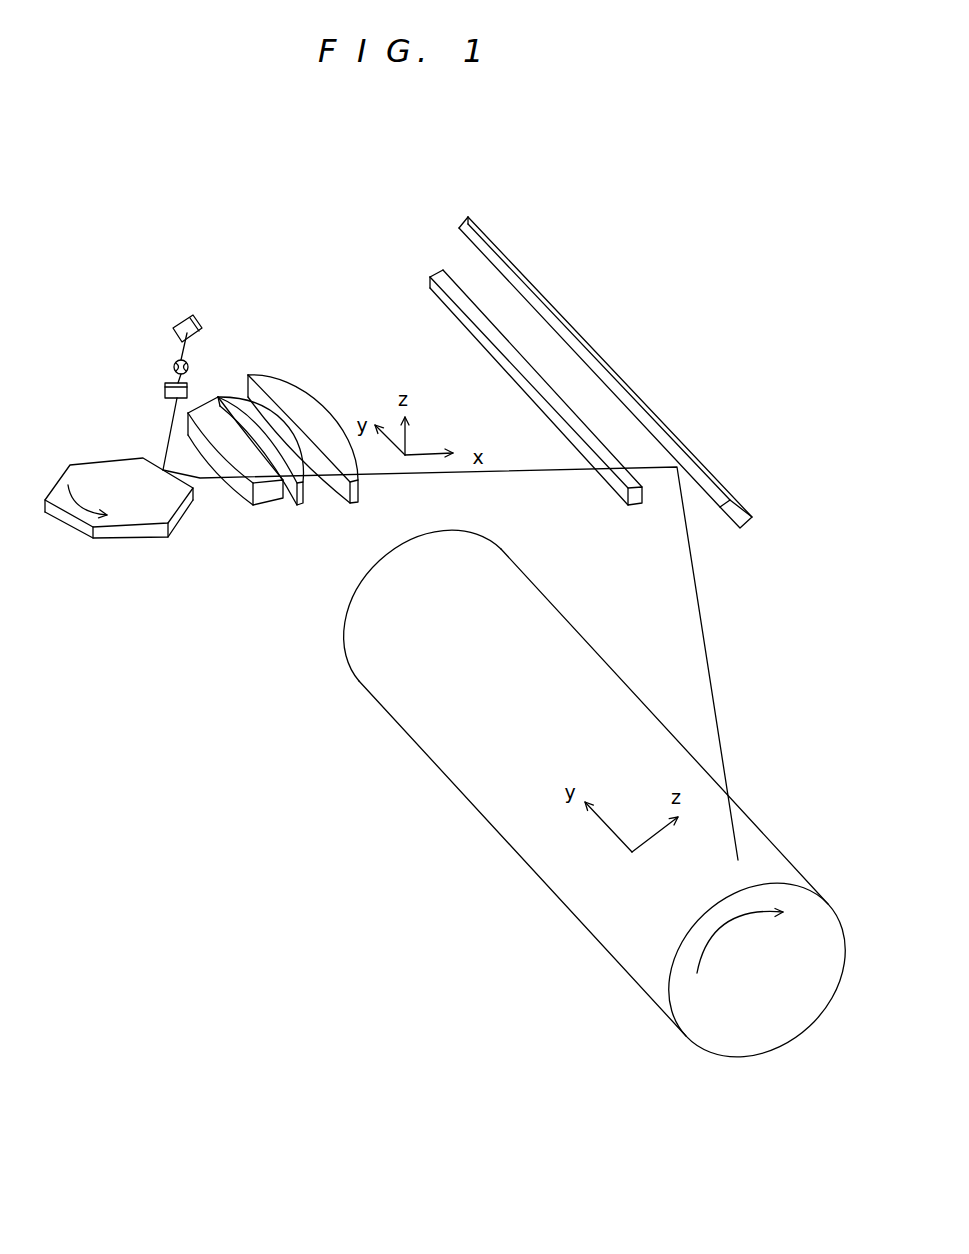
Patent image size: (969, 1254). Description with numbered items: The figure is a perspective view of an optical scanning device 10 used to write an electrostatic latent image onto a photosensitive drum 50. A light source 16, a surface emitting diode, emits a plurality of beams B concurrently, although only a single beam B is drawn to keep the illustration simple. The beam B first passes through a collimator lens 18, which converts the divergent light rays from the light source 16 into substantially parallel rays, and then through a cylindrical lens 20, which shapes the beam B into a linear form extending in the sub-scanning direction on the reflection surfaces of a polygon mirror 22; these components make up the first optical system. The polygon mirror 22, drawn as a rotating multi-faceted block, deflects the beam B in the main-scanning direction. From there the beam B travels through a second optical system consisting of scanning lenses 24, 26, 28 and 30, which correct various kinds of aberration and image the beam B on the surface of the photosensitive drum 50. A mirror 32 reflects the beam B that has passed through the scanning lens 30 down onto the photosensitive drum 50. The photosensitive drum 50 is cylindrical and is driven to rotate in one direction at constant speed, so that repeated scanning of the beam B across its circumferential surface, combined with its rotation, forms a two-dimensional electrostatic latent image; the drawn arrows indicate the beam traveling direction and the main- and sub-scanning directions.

The optical scanning device 10 is at (116, 274).
The light source 16 is at (175, 328).
The collimator lens 18 is at (173, 365).
The cylindrical lens 20 is at (163, 392).
The polygon mirror 22 is at (130, 517).
The scanning lens 24 is at (268, 495).
The scanning lens 26 is at (302, 495).
The scanning lens 28 is at (362, 503).
The scanning lens 30 is at (528, 388).
The mirror 32 is at (568, 333).
The photosensitive drum 50 is at (533, 843).
The beam B is at (163, 442).